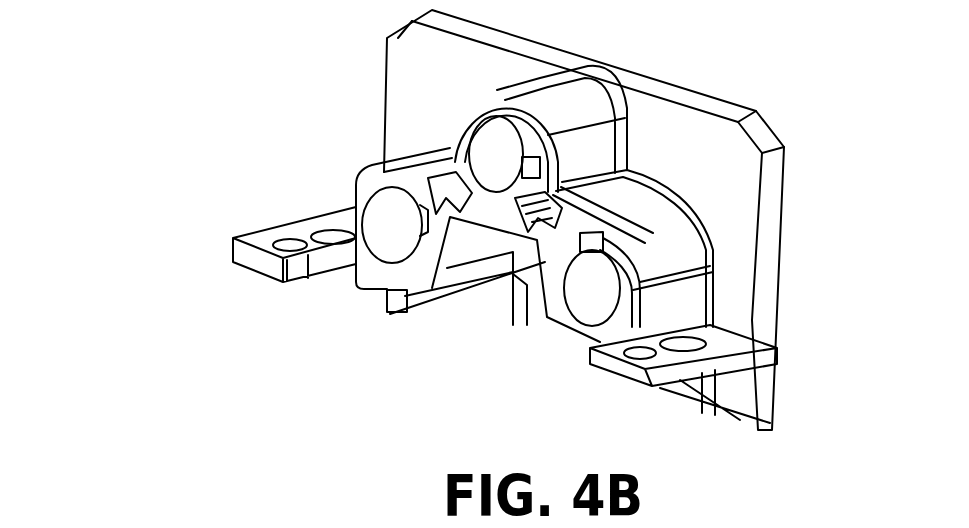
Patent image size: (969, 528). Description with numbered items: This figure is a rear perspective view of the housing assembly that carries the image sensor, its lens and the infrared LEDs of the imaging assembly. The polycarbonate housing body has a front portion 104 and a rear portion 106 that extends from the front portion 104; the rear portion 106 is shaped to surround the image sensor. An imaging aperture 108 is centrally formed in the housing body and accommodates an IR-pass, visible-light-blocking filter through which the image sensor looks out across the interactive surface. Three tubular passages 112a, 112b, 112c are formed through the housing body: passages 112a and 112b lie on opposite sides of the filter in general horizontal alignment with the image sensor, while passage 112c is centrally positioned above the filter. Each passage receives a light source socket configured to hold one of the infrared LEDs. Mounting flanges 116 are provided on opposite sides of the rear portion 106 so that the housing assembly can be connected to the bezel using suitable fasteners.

The front portion 104 is at (420, 80).
The rear portion 106 is at (582, 102).
The imaging aperture 108 is at (567, 350).
The passage 112a is at (590, 300).
The passage 112b is at (392, 240).
The passage 112c is at (496, 175).
The mounting flanges 116 is at (302, 237).